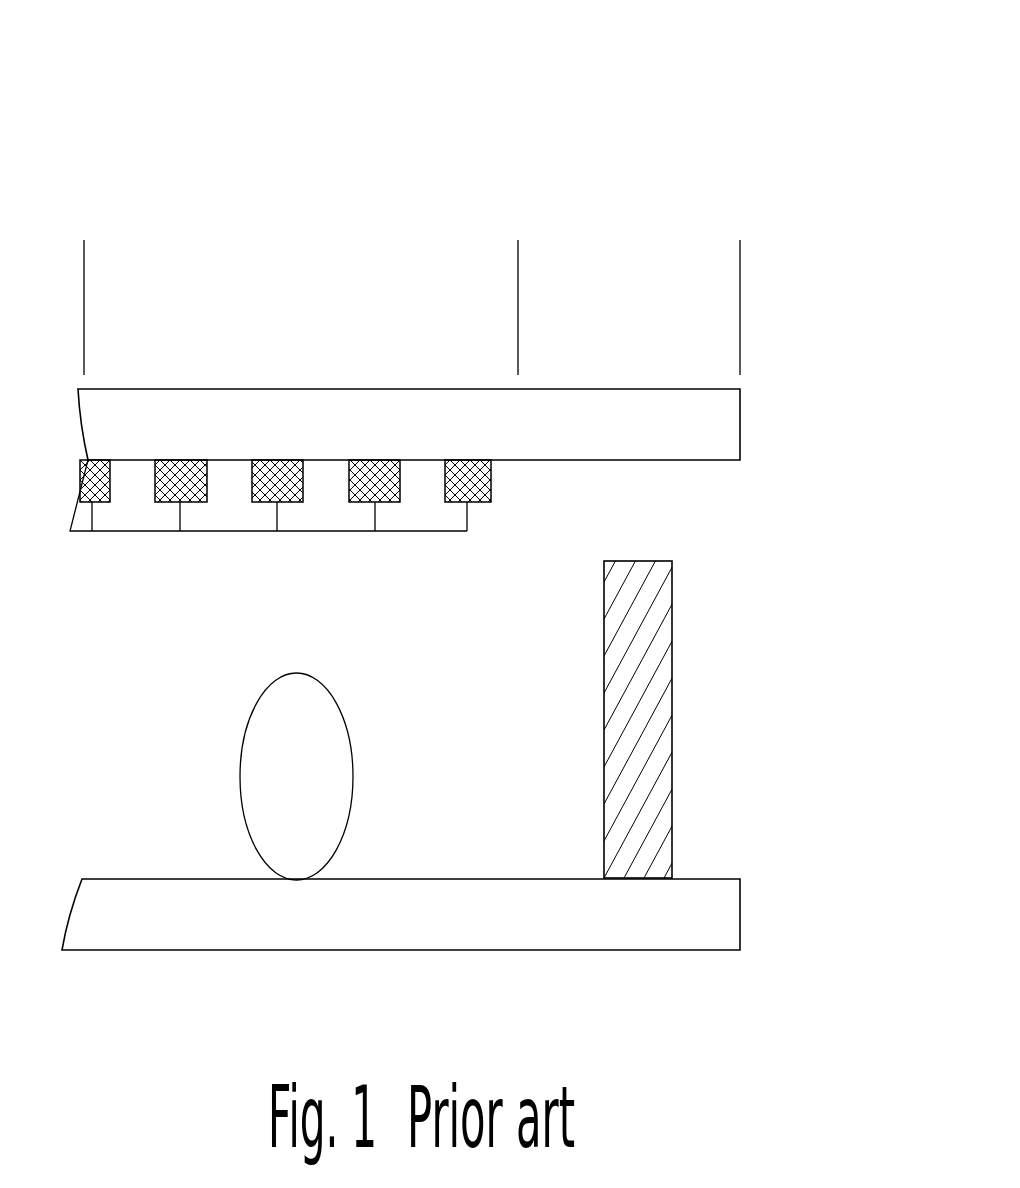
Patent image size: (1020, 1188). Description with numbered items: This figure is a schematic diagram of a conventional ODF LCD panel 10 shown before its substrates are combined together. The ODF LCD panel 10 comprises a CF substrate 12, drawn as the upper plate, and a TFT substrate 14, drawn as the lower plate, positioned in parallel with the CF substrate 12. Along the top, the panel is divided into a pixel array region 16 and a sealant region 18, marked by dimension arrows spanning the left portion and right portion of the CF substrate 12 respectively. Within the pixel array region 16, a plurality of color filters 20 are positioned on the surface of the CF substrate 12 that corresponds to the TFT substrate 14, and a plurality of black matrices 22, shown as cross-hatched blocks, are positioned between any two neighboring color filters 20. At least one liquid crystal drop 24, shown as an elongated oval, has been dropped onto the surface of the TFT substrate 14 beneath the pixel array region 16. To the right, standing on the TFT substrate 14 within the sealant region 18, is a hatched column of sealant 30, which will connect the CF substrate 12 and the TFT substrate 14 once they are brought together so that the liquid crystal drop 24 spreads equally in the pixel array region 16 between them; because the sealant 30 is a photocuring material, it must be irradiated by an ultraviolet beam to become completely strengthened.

The ODF LCD panel 10 is at (642, 85).
The CF substrate 12 is at (717, 425).
The TFT substrate 14 is at (717, 910).
The pixel array region 16 is at (518, 263).
The sealant region 18 is at (740, 263).
The color filters 20 is at (148, 523).
The black matrices 22 is at (175, 473).
The liquid crystal drop 24 is at (330, 763).
The sealant 30 is at (653, 712).